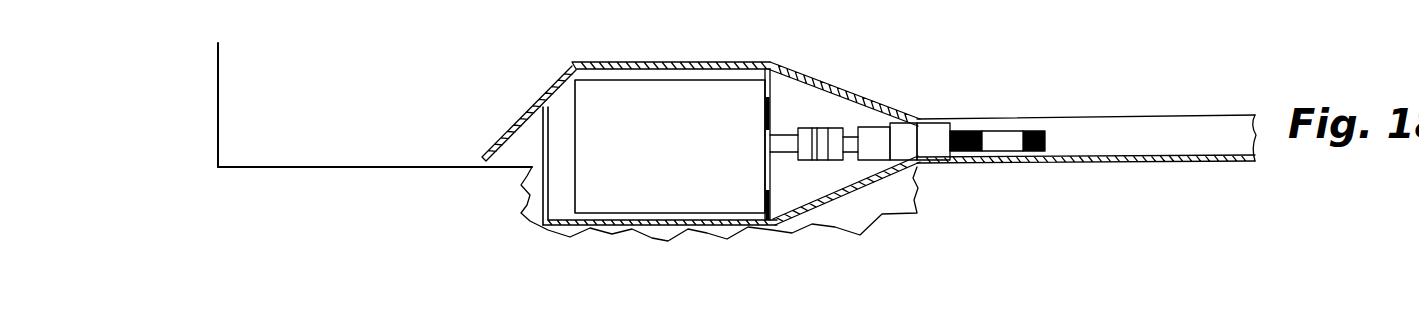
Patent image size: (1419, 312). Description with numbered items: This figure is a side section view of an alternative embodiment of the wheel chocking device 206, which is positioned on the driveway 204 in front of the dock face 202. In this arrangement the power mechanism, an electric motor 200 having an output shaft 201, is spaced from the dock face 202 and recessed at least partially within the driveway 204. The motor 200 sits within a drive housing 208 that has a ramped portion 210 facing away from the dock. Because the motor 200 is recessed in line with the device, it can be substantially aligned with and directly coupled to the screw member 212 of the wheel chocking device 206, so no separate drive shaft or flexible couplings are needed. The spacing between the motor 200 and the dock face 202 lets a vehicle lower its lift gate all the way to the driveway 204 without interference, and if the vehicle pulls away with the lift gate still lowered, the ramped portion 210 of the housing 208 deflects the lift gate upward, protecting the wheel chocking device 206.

The motor 200 is at (707, 100).
The output shaft 201 is at (788, 138).
The dock face 202 is at (218, 92).
The driveway 204 is at (405, 167).
The wheel chocking device 206 is at (1015, 118).
The drive housing 208 is at (699, 62).
The ramped portion 210 is at (530, 108).
The screw member 212 is at (1002, 137).